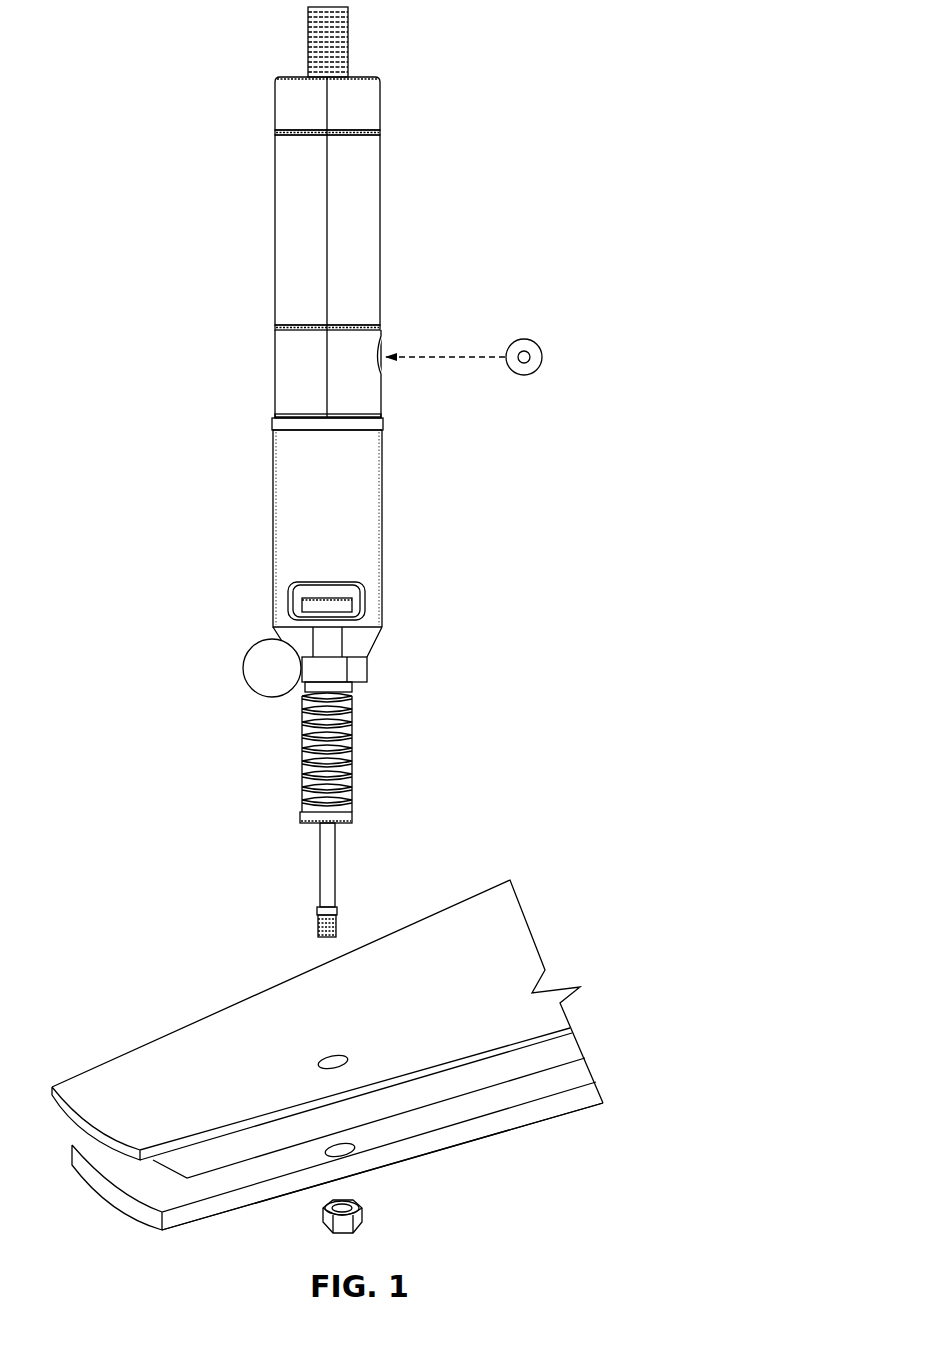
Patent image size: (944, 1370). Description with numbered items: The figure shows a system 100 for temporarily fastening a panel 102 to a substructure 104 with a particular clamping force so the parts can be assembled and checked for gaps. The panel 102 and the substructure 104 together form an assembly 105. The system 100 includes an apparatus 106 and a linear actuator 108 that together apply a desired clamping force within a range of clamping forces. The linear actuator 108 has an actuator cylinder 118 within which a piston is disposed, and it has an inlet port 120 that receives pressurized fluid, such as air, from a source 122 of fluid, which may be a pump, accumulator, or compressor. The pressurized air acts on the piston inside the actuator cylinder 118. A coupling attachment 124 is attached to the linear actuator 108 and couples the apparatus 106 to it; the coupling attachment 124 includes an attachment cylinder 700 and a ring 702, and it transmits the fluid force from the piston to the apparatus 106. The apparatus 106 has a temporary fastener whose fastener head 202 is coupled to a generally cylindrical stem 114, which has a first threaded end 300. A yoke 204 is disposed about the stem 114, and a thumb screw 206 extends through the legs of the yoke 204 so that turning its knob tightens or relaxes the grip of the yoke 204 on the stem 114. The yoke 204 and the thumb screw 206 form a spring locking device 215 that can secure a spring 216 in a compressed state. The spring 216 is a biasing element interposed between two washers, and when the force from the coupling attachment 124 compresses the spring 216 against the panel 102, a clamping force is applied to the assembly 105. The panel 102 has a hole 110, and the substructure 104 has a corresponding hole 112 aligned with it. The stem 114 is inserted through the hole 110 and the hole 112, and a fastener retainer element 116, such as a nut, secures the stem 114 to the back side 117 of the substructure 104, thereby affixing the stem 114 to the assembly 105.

The system 100 is at (208, 75).
The linear actuator 108 is at (268, 222).
The actuator cylinder 118 is at (378, 210).
The inlet port 120 is at (390, 370).
The source of fluid 122 is at (530, 338).
The ring 702 is at (272, 423).
The attachment cylinder 700 is at (273, 478).
The coupling attachment 124 is at (390, 518).
The fastener head 202 is at (300, 600).
The spring locking device 215 is at (230, 634).
The thumb screw 206 is at (240, 668).
The yoke 204 is at (370, 673).
The spring 216 is at (348, 730).
The apparatus 106 is at (292, 760).
The stem 114 is at (322, 877).
The first threaded end 300 is at (312, 932).
The panel 102 is at (498, 878).
The assembly 105 is at (126, 998).
The hole 110 is at (339, 1052).
The hole 112 is at (344, 1142).
The substructure 104 is at (535, 1112).
The back side 117 is at (380, 1168).
The fastener retainer element 116 is at (362, 1217).